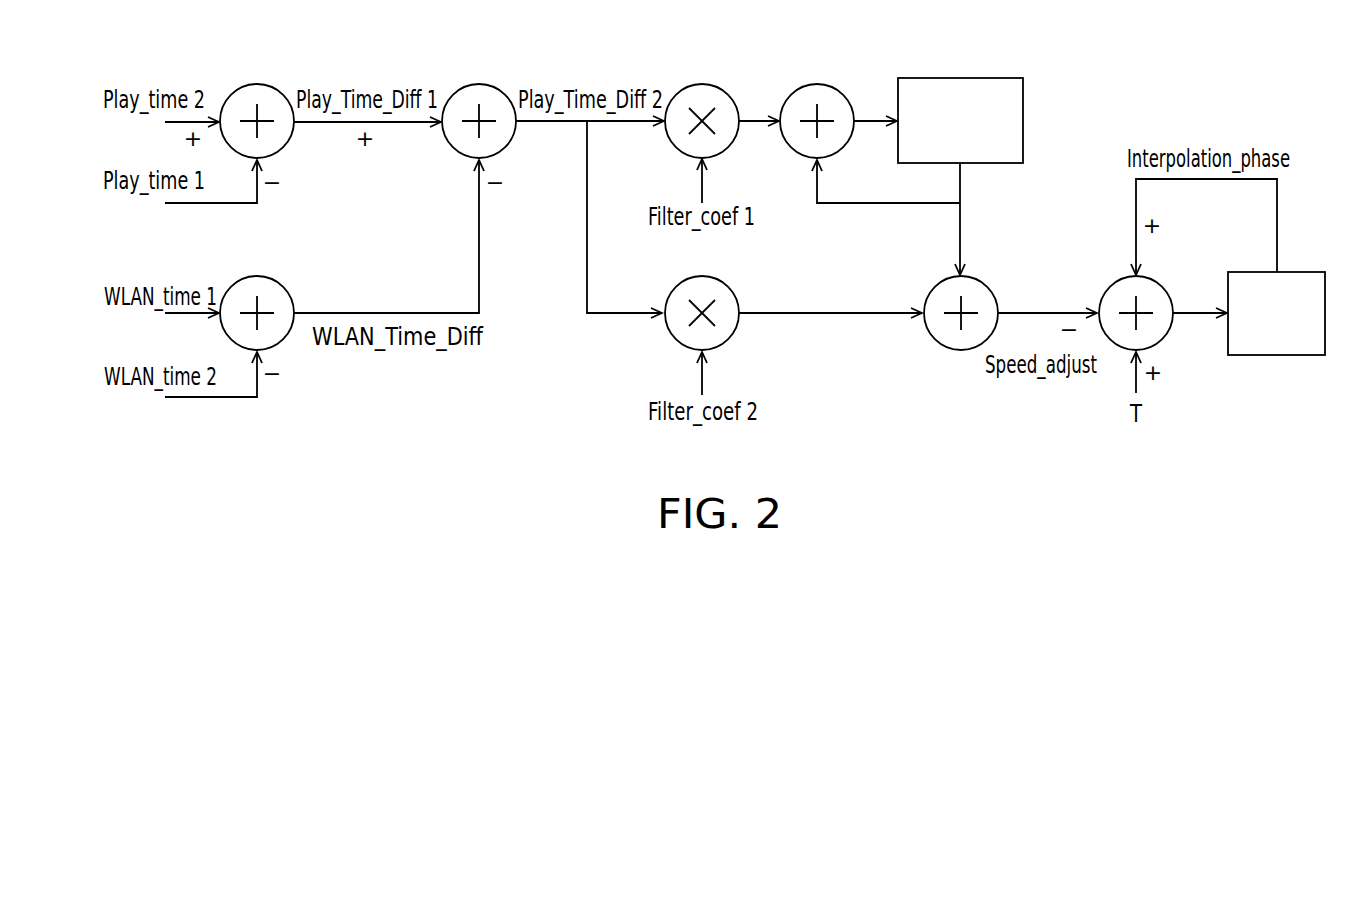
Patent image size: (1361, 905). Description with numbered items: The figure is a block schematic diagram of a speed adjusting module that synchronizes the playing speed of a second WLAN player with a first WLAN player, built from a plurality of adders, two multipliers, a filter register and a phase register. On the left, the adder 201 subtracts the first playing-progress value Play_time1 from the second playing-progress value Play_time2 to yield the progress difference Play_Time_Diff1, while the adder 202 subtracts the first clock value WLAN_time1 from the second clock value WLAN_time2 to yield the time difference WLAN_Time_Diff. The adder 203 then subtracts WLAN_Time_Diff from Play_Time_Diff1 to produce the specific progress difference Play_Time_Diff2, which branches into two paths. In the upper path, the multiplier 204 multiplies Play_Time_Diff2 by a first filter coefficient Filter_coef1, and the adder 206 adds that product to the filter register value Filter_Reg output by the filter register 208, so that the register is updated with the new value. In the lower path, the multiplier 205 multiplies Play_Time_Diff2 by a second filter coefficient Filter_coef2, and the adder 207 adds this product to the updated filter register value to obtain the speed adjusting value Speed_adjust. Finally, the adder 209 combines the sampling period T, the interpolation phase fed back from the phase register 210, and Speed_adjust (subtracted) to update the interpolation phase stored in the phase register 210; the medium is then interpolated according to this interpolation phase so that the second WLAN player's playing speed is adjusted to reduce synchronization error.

The adder 201 is at (257, 84).
The adder 202 is at (283, 287).
The adder 203 is at (479, 84).
The multiplier 204 is at (702, 84).
The multiplier 205 is at (728, 287).
The adder 206 is at (817, 84).
The adder 207 is at (987, 287).
The filter register 208 is at (961, 77).
The adder 209 is at (1160, 285).
The phase register 210 is at (1277, 356).